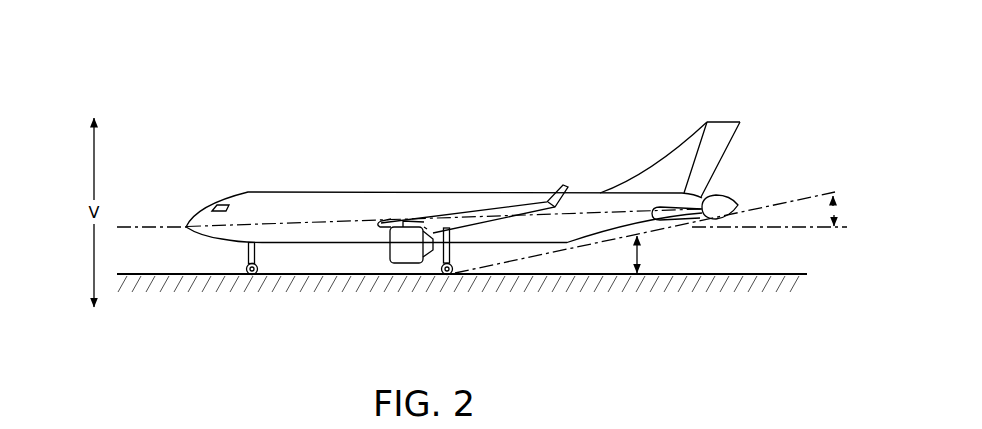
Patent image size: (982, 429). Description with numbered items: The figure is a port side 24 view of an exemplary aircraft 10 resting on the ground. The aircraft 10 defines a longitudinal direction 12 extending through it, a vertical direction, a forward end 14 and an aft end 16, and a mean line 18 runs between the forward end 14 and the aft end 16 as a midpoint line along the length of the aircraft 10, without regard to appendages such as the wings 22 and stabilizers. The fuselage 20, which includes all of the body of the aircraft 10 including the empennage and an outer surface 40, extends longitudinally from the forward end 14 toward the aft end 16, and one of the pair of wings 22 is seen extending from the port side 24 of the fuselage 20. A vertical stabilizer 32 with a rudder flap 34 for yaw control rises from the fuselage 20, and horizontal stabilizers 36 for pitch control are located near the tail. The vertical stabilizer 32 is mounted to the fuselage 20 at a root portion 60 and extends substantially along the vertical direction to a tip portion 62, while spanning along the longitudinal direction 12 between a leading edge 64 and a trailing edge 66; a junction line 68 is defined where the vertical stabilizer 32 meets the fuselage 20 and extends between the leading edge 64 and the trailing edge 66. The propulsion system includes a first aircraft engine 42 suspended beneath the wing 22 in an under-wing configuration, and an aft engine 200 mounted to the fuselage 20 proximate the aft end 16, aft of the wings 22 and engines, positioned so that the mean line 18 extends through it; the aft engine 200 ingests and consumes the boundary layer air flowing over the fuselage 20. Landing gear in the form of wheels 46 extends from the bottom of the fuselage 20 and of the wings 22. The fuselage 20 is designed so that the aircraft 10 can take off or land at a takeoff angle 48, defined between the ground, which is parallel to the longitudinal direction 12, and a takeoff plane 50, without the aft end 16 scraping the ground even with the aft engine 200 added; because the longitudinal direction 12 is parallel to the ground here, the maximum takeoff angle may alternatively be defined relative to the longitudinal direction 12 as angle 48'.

The aircraft 10 is at (494, 205).
The longitudinal direction 12 is at (135, 226).
The forward end 14 is at (193, 245).
The aft end 16 is at (750, 203).
The mean line 18 is at (297, 222).
The fuselage 20 is at (268, 236).
The wings 22 is at (510, 207).
The port side 24 is at (540, 243).
The vertical stabilizer 32 is at (712, 129).
The rudder flap 34 is at (737, 131).
The horizontal stabilizers 36 is at (693, 219).
The outer surface 40 is at (409, 249).
The first aircraft engine 42 is at (393, 272).
The wheels 46 is at (443, 271).
The takeoff angle 48 is at (656, 289).
The takeoff angle 48' is at (845, 246).
The takeoff plane 50 is at (560, 258).
The root portion 60 is at (652, 181).
The tip portion 62 is at (726, 110).
The leading edge 64 is at (655, 139).
The trailing edge 66 is at (734, 146).
The junction line 68 is at (636, 187).
The aft engine 200 is at (730, 181).